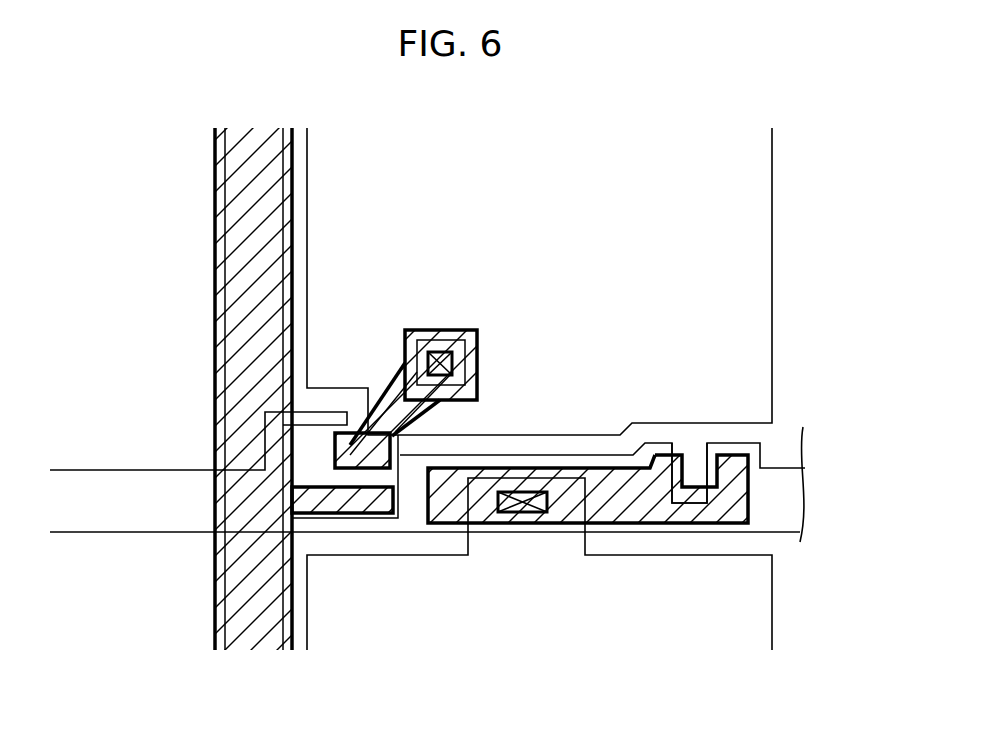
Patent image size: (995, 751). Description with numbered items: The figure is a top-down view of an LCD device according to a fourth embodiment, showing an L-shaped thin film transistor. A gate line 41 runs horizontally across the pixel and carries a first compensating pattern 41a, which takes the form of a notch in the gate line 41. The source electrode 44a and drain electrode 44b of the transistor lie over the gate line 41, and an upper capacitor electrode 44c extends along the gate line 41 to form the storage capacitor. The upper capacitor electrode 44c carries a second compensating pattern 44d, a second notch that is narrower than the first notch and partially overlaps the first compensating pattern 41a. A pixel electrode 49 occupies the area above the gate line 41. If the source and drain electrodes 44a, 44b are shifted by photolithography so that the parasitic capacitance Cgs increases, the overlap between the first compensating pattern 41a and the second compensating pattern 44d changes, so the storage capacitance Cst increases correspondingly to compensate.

The gate line 41 is at (408, 523).
The first compensating pattern 41a is at (700, 450).
The source electrode 44a is at (328, 505).
The drain electrode 44b is at (352, 443).
The upper capacitor electrode 44c is at (608, 512).
The second compensating pattern 44d is at (692, 490).
The pixel electrode 49 is at (762, 279).